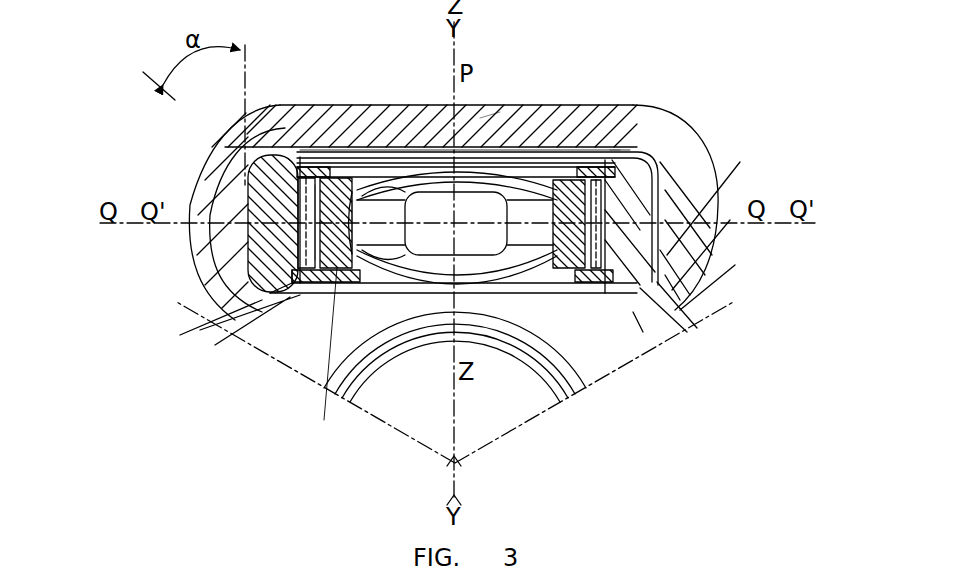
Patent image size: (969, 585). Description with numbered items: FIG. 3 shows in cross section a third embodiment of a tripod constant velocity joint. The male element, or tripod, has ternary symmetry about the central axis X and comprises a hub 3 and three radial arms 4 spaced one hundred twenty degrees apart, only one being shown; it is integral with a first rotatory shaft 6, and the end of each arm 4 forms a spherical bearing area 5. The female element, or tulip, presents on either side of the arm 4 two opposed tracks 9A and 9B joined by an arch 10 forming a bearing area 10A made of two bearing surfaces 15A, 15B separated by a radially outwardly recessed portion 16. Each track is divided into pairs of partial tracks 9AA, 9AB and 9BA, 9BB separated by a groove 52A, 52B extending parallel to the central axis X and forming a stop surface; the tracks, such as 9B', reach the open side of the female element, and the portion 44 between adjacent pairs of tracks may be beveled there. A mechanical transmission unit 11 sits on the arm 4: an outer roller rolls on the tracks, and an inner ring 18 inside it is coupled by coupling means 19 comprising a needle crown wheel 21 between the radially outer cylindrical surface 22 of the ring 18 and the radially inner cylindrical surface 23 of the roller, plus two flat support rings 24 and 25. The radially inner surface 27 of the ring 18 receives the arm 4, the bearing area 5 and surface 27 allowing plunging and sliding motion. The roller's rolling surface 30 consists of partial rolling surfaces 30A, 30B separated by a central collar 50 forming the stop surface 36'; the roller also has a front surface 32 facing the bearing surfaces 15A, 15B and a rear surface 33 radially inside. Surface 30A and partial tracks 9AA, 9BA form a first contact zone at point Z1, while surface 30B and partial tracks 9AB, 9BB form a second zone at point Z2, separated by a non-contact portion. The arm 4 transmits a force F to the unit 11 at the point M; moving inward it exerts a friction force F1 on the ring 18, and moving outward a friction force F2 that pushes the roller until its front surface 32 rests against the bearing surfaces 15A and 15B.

The hub 3 is at (352, 330).
The radial arm 4 is at (560, 176).
The spherical bearing area 5 is at (490, 143).
The first rotatory shaft 6 is at (424, 406).
The track 9A is at (242, 256).
The partial track 9AA is at (248, 170).
The partial track 9AB is at (262, 290).
The track 9B is at (752, 218).
The partial track 9BA is at (673, 185).
The partial track 9BB is at (668, 326).
The track 9B' is at (815, 106).
The arch 10 is at (486, 120).
The bearing area 10A is at (300, 172).
The mechanical transmission unit 11 is at (615, 148).
The bearing surface 15A is at (258, 157).
The bearing surface 15B is at (660, 222).
The radially outwardly recessed portion 16 is at (482, 175).
The inner ring 18 is at (316, 357).
The coupling means 19 is at (335, 278).
The needle crown wheel 21 is at (292, 280).
The radially outer cylindrical surface 22 is at (336, 185).
The radially inner cylindrical surface 23 is at (346, 200).
The flat support ring 24 is at (320, 298).
The flat support ring 25 is at (318, 180).
The radially inner surface 27 is at (362, 230).
The peripheral rolling surface 30 is at (242, 223).
The partial rolling surface 30A is at (655, 190).
The partial rolling surface 30B is at (690, 290).
The front surface 32 is at (642, 160).
The rear surface 33 is at (640, 318).
The stop surface 36' is at (744, 246).
The portion of the female element 44 is at (695, 318).
The central collar 50 is at (660, 238).
The groove 52A is at (246, 242).
The groove 52B is at (673, 268).
The point of application M is at (453, 228).
The force F is at (360, 223).
The friction force F1 is at (360, 248).
The friction force F2 is at (360, 198).
The contact point Z1 is at (246, 193).
The contact point Z2 is at (258, 272).
The central axis X- X is at (459, 467).